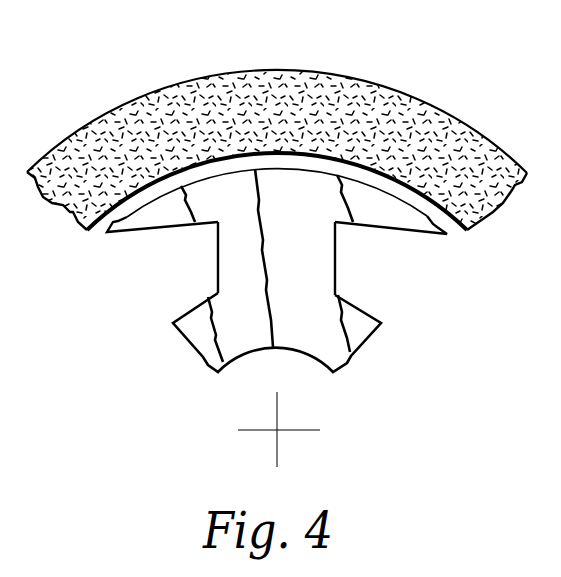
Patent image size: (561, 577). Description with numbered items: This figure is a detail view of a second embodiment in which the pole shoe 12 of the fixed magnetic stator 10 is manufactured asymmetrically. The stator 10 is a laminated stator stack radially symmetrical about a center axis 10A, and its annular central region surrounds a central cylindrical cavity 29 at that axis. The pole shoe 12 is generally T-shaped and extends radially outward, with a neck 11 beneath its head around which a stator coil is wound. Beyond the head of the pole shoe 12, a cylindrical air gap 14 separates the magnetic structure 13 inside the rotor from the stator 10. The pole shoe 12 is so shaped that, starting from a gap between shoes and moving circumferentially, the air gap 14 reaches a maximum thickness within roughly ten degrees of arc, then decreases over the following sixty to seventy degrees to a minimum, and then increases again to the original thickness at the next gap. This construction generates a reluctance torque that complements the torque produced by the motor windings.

The stator 10 is at (360, 325).
The center axis 10A is at (277, 432).
The neck 11 is at (323, 260).
The pole shoe 12 is at (365, 197).
The magnetic structure 13 is at (462, 140).
The air gap 14 is at (287, 158).
The central cylindrical cavity 29 is at (310, 406).